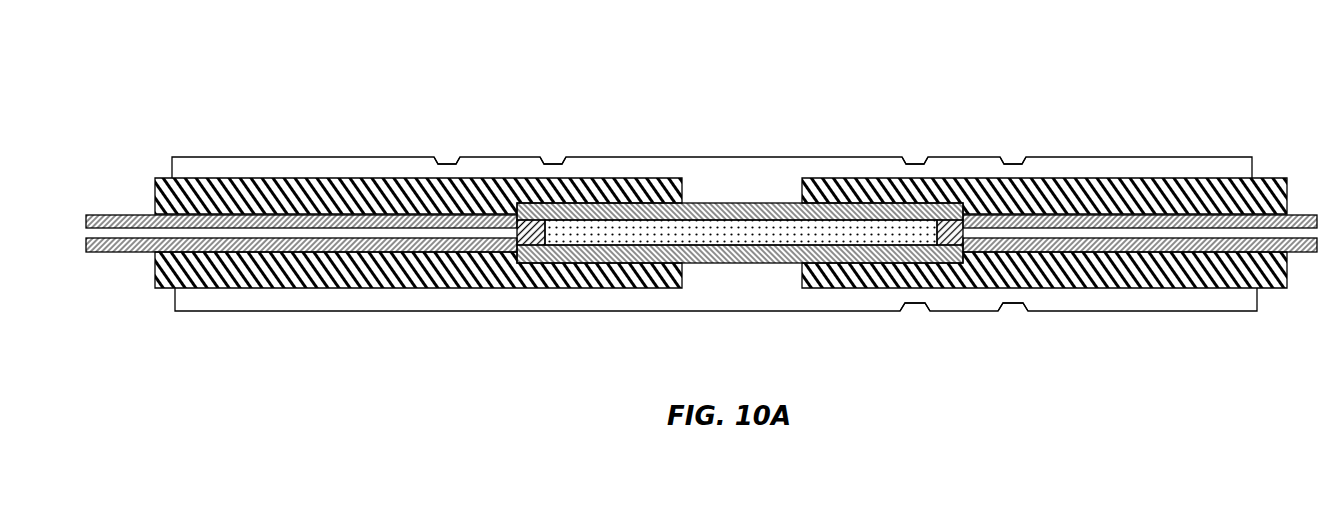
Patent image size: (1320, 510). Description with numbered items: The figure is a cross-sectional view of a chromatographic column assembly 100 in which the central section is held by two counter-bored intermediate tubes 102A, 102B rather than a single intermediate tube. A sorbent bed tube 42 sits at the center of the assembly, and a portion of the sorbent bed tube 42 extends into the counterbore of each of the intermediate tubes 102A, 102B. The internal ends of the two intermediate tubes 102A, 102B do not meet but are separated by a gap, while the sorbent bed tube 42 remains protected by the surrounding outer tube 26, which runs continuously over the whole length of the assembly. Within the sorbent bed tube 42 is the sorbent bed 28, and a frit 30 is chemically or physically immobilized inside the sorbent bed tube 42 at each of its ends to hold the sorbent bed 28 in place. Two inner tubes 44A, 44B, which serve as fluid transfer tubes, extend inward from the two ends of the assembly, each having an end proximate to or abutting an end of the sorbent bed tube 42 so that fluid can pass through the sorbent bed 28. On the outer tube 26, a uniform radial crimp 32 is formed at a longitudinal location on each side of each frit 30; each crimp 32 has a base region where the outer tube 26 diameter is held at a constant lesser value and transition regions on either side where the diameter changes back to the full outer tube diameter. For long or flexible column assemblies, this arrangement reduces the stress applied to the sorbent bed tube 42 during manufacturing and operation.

The chromatographic column assembly 100 is at (701, 203).
The outer tube 26 is at (670, 157).
The uniform radial crimp 32 is at (447, 146).
The counter-bored intermediate tube 102A is at (157, 288).
The counter-bored intermediate tube 102B is at (1272, 178).
The inner tube 44A is at (92, 214).
The inner tube 44B is at (1315, 253).
The sorbent bed tube 42 is at (781, 263).
The sorbent bed 28 is at (660, 237).
The frit 30 is at (531, 240).